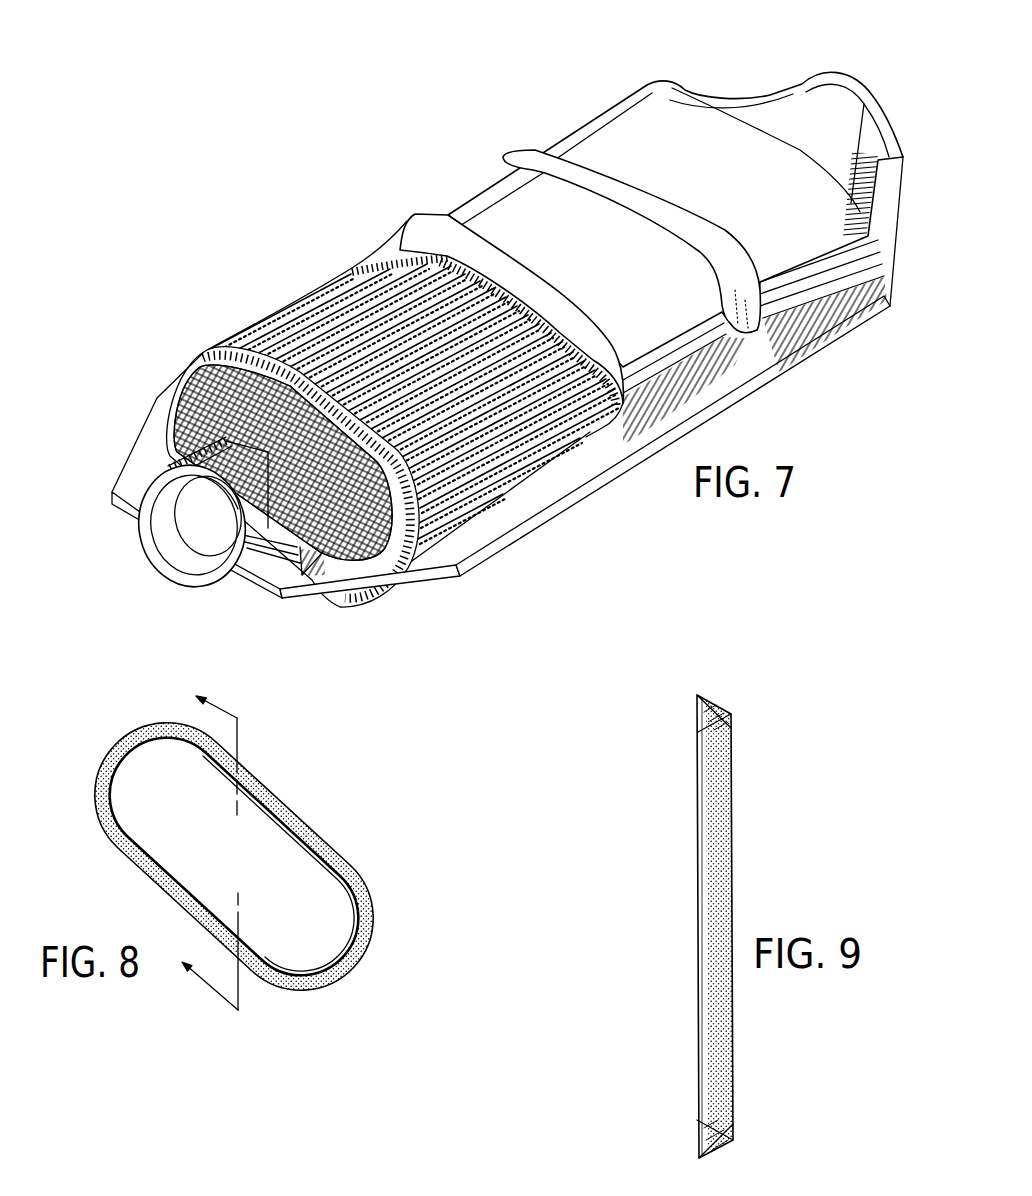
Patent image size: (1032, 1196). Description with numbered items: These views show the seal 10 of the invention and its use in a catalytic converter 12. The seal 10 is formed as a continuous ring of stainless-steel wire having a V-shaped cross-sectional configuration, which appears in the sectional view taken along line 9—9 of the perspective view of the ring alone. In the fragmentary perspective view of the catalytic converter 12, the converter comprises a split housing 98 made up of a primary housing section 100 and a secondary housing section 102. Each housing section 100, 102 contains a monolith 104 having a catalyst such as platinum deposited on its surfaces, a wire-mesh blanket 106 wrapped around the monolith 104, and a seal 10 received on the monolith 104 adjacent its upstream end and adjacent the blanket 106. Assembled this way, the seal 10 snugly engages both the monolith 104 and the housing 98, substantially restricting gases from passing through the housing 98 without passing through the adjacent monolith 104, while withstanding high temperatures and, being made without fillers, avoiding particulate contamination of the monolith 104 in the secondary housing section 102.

In FIG. 7, the seal 10 is at (200, 338).
In FIG. 8, the seal 10 is at (365, 814).
In FIG. 9, the seal 10 is at (742, 717).
In FIG. 7, the catalytic converter 12 is at (442, 180).
In FIG. 7, the split housing 98 is at (525, 520).
In FIG. 7, the primary housing section 100 is at (627, 460).
In FIG. 7, the secondary housing section 102 is at (677, 127).
In FIG. 7, the monolith 104 is at (355, 542).
In FIG. 7, the wire-mesh blanket 106 is at (328, 311).
In FIG. 8, the section line 9— 9 is at (257, 1010).